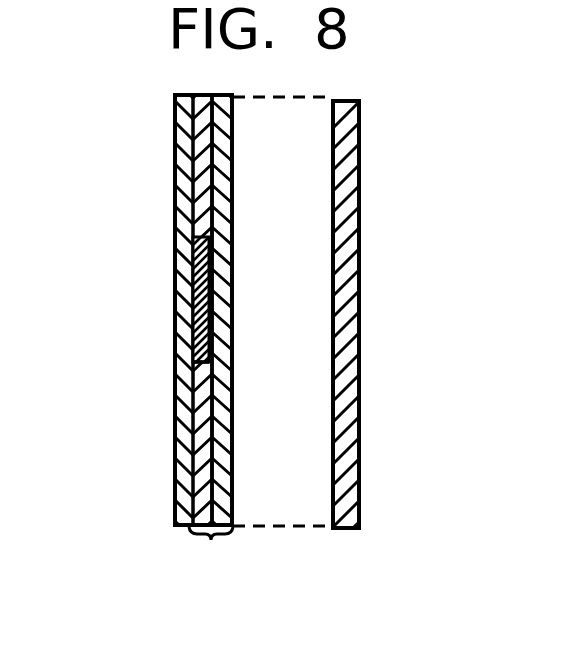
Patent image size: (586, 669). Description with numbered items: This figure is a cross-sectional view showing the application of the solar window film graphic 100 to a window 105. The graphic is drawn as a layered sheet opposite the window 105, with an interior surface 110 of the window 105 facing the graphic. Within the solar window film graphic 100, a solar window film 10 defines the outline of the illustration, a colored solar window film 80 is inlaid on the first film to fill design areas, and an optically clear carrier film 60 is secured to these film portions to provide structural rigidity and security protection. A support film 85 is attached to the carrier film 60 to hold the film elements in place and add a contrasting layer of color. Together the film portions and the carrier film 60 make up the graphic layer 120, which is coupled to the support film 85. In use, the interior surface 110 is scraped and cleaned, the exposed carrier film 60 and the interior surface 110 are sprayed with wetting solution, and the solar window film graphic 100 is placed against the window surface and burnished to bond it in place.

The solar window film 10 is at (153, 310).
The carrier film 60 is at (218, 180).
The colored solar window film 80 is at (190, 275).
The support film 85 is at (185, 358).
The solar window film graphic 100 is at (157, 491).
The window 105 is at (352, 347).
The interior surface 110 is at (330, 504).
The graphic layer 120 is at (211, 540).